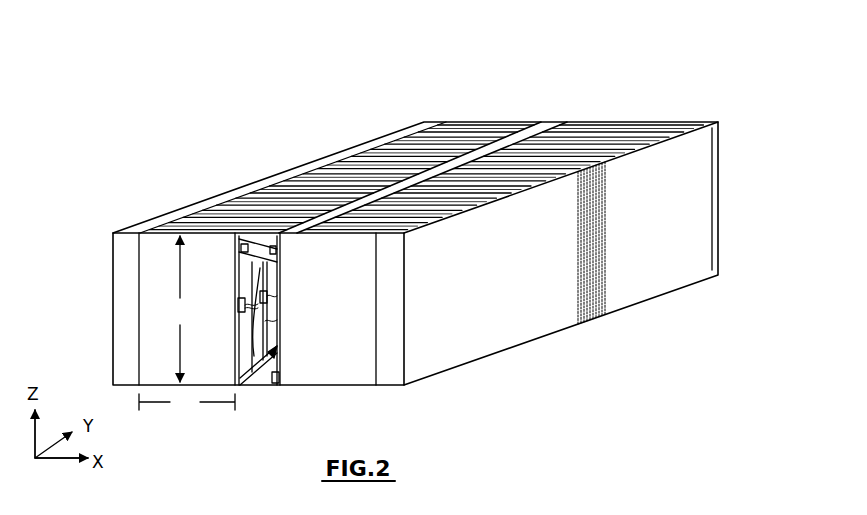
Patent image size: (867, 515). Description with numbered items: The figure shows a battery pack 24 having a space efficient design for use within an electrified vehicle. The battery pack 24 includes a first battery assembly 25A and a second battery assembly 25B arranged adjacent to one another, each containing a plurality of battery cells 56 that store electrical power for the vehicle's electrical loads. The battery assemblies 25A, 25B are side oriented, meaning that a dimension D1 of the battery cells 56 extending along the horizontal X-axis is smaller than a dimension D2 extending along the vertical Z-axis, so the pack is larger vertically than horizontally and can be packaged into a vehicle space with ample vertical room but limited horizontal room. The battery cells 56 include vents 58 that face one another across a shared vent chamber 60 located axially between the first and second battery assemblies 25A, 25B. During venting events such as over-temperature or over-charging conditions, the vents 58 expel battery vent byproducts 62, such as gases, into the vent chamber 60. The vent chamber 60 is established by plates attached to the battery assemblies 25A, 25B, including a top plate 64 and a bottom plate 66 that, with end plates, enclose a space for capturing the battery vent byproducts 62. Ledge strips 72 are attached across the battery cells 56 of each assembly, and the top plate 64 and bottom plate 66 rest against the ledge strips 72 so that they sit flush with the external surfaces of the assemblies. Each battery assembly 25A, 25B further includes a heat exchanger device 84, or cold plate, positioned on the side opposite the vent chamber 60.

The battery pack 24 is at (422, 80).
The first battery assembly 25A is at (205, 196).
The second battery assembly 25B is at (655, 104).
The battery cells 56 is at (320, 172).
The vents 58 is at (238, 300).
The vent chamber 60 is at (274, 350).
The battery vent byproducts 62 is at (277, 300).
The top plate 64 is at (482, 152).
The bottom plate 66 is at (272, 388).
The ledge strips 72 is at (243, 236).
The heat exchanger device 84 is at (123, 306).
The dimension D1 is at (187, 403).
The dimension D2 is at (179, 309).